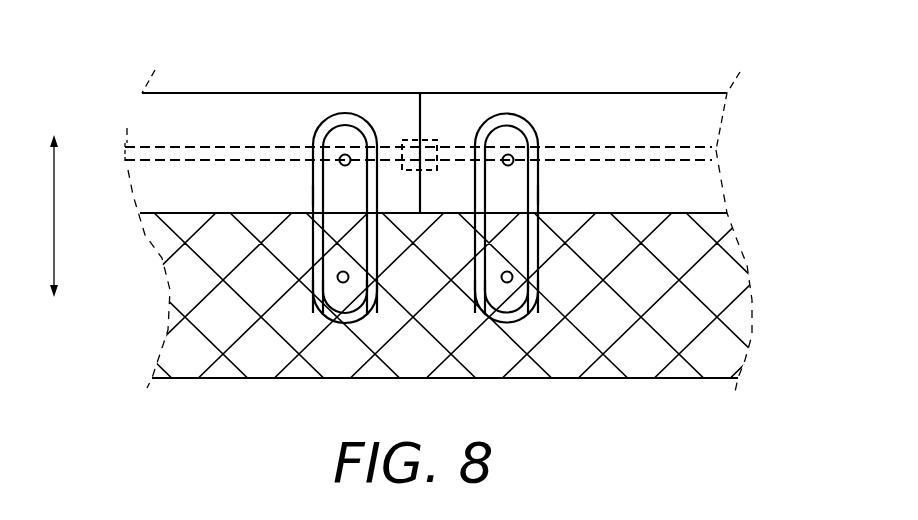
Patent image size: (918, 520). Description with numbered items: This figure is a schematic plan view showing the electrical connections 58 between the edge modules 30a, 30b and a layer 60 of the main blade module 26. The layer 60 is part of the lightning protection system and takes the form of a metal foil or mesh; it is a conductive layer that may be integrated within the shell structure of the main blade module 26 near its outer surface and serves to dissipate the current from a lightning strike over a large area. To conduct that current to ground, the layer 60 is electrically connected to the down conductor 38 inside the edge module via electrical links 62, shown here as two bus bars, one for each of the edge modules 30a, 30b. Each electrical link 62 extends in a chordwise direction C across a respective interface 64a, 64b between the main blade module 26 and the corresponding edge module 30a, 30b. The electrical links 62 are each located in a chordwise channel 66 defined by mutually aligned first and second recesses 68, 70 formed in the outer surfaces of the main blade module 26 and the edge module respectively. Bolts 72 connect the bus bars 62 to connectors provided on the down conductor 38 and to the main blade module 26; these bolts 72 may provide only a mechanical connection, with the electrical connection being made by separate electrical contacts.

The main blade module 26 is at (609, 398).
The edge module 30a is at (186, 84).
The edge module 30b is at (694, 81).
The down conductor 38 is at (672, 150).
The electrical connection 58 is at (303, 128).
The layer 60 is at (713, 315).
The electrical link 62 is at (497, 224).
The interface 64a is at (158, 255).
The interface 64b is at (678, 213).
The chordwise channel 66 is at (303, 195).
The first recess 68 is at (343, 316).
The second recess 70 is at (505, 122).
The bolt 72 is at (513, 277).
The chordwise direction C is at (40, 216).